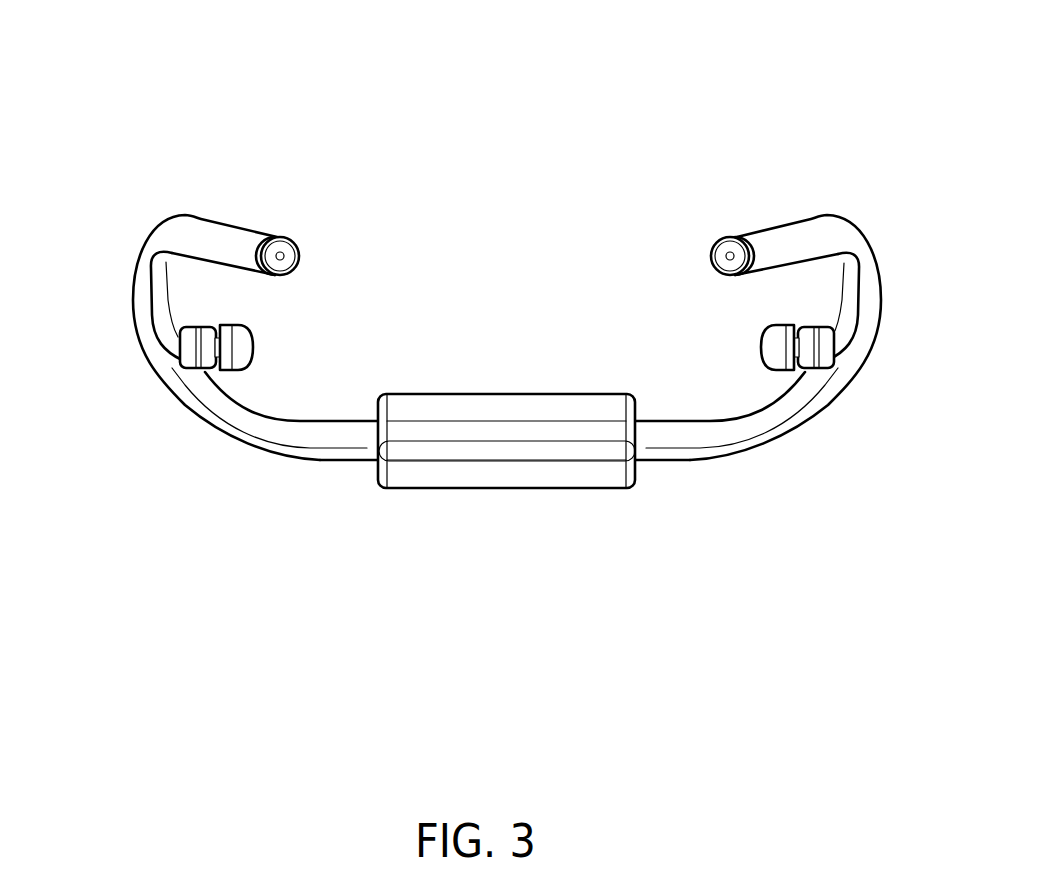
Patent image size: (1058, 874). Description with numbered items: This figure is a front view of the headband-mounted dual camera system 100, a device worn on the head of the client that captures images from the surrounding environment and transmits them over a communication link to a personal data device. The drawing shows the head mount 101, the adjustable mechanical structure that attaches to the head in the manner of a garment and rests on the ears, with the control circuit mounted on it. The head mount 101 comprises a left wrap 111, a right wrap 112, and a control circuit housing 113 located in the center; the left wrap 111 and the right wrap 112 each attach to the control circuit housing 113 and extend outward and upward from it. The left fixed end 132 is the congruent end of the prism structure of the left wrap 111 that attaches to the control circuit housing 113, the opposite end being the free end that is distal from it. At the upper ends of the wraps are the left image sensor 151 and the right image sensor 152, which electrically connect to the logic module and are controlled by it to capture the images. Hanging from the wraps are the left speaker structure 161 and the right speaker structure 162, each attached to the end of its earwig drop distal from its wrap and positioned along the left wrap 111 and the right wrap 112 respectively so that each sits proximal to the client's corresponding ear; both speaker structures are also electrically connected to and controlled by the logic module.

The head mount 101 is at (360, 140).
The headband-mounted dual camera system 100 is at (858, 311).
The left wrap 111 is at (351, 445).
The right wrap 112 is at (657, 450).
The control circuit housing 113 is at (497, 395).
The left fixed end 132 is at (158, 322).
The left image sensor 151 is at (726, 243).
The right image sensor 152 is at (296, 248).
The left speaker structure 161 is at (770, 342).
The right speaker structure 162 is at (254, 346).